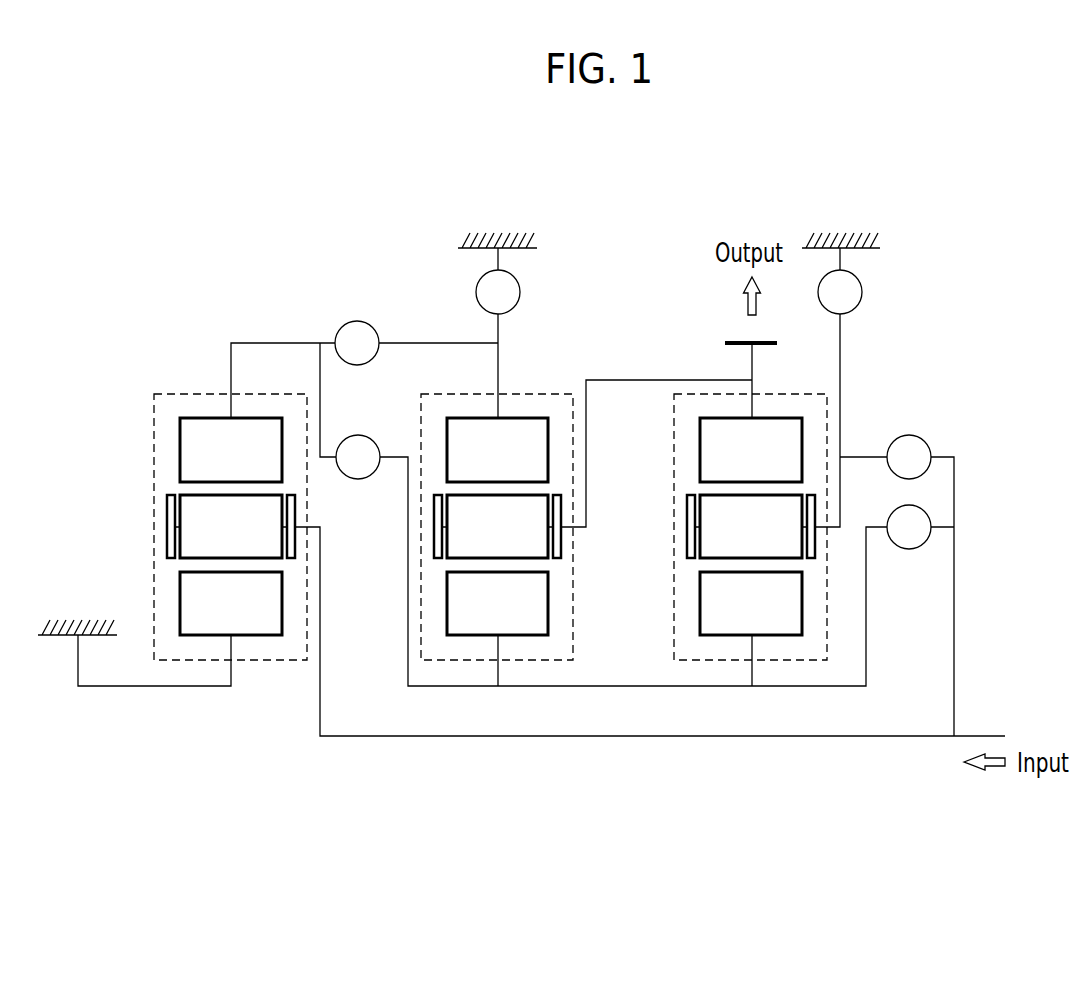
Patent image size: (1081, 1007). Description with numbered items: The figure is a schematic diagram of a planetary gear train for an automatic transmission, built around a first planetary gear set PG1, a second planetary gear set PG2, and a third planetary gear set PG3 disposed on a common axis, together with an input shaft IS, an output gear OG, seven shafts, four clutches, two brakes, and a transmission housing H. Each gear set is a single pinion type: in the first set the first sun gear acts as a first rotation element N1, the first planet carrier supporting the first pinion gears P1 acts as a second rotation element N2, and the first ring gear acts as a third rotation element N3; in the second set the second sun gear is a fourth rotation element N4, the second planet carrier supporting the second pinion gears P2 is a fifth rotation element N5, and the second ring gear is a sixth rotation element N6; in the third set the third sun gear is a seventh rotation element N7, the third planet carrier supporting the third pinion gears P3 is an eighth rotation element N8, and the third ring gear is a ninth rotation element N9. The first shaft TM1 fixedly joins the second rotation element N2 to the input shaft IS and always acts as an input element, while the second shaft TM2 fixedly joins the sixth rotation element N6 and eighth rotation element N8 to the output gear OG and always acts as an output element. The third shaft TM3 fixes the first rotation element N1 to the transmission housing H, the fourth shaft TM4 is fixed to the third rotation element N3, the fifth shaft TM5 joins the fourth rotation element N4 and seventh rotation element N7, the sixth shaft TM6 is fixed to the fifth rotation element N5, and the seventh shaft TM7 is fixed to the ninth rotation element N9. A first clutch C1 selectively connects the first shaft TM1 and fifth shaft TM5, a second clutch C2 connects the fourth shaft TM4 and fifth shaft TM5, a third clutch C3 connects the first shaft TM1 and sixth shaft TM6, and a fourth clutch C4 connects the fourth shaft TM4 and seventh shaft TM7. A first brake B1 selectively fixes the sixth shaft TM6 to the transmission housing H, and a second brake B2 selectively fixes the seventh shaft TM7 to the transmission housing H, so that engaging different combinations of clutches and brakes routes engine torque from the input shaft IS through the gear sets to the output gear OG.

The first planetary gear set PG1 is at (268, 661).
The second planetary gear set PG2 is at (710, 662).
The third planetary gear set PG3 is at (452, 662).
The first rotation element N1 is at (231, 603).
The second rotation element N2 is at (167, 505).
The third rotation element N3 is at (231, 450).
The fourth rotation element N4 is at (751, 603).
The fifth rotation element N5 is at (687, 505).
The sixth rotation element N6 is at (751, 450).
The seventh rotation element N7 is at (497, 603).
The eighth rotation element N8 is at (563, 550).
The ninth rotation element N9 is at (497, 450).
The first pinion gears P1 is at (231, 526).
The second pinion gears P2 is at (751, 526).
The third pinion gears P3 is at (497, 526).
The first shaft TM1 is at (814, 740).
The second shaft TM2 is at (622, 379).
The third shaft TM3 is at (125, 688).
The fourth shaft TM4 is at (255, 341).
The fifth shaft TM5 is at (552, 688).
The sixth shaft TM6 is at (843, 350).
The seventh shaft TM7 is at (414, 341).
The first clutch C1 is at (909, 527).
The second clutch C2 is at (358, 457).
The third clutch C3 is at (909, 457).
The fourth clutch C4 is at (357, 343).
The first brake B1 is at (840, 281).
The second brake B2 is at (498, 281).
The transmission housing H is at (490, 242).
The output gear OG is at (736, 341).
The input shaft IS is at (992, 733).